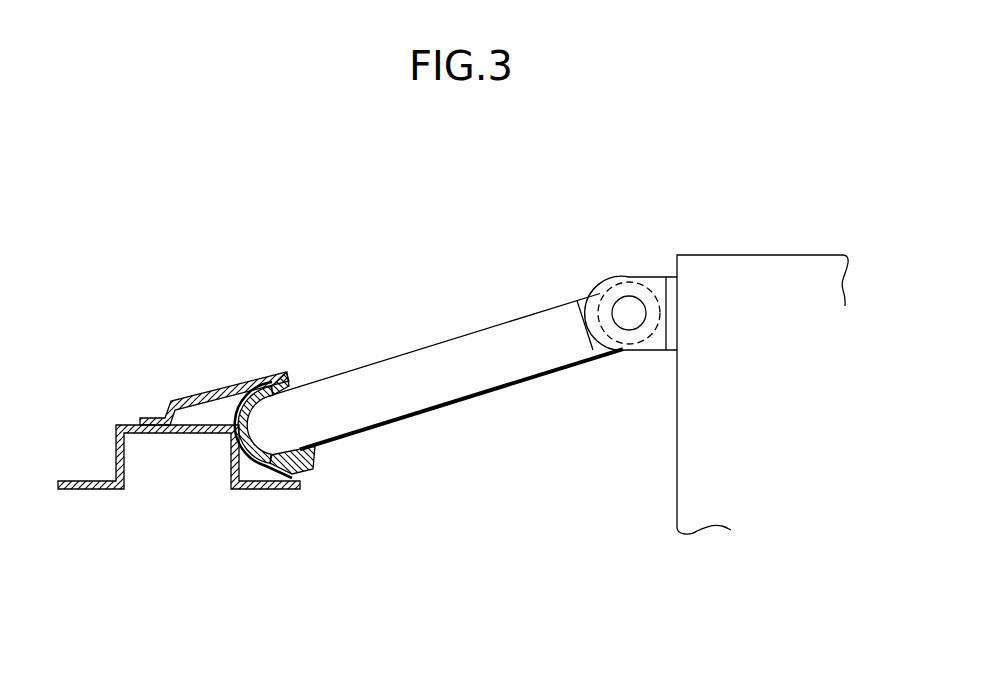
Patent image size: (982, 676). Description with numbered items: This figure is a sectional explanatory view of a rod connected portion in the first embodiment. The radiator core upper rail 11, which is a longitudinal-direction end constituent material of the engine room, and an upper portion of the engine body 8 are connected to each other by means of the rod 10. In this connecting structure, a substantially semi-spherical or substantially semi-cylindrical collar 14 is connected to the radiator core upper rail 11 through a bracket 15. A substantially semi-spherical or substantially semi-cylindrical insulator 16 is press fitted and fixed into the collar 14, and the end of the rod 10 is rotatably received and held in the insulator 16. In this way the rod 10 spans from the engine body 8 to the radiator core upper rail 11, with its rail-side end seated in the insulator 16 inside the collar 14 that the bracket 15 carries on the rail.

The engine body 8 is at (751, 251).
The rod 10 is at (428, 345).
The radiator core upper rail 11 is at (125, 423).
The collar 14 is at (256, 460).
The bracket 15 is at (222, 383).
The insulator 16 is at (318, 455).